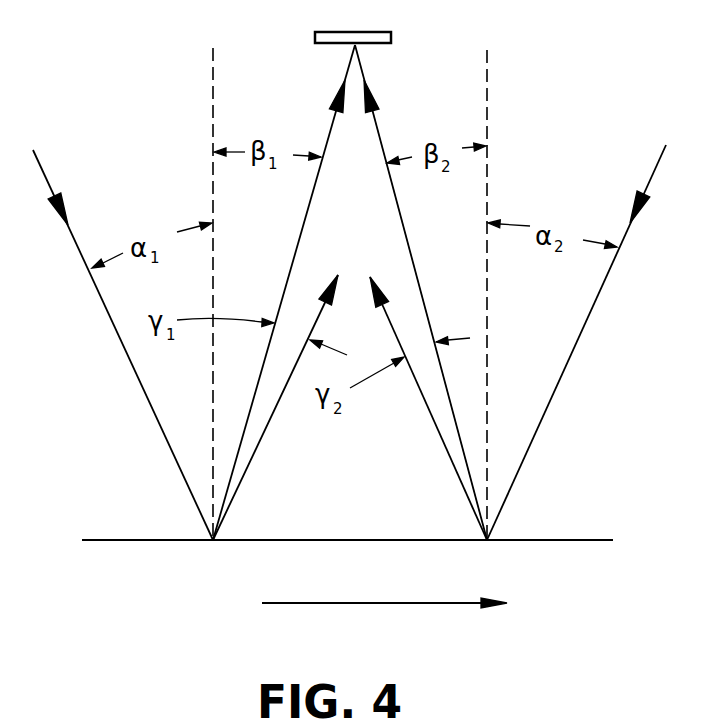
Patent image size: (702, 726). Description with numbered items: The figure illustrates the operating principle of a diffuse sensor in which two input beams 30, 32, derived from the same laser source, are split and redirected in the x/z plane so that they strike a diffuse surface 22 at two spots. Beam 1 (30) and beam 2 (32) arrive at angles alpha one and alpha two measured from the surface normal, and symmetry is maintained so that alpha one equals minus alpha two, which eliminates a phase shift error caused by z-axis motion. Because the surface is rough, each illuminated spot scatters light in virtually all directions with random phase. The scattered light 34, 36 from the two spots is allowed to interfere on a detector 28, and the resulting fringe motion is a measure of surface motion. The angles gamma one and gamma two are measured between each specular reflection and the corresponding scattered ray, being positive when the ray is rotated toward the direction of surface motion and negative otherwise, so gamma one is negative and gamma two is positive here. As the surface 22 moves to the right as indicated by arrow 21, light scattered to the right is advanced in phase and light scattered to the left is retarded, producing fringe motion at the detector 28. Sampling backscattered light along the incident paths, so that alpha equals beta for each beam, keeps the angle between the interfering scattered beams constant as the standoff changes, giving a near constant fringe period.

The beam 1 is at (120, 331).
The beam 2 is at (581, 330).
The arrow 21 is at (355, 603).
The surface 22 is at (568, 540).
The detector 28 is at (378, 43).
The input beam 30 is at (138, 375).
The input beam 32 is at (570, 358).
The scattered light 34 is at (250, 463).
The scattered light 36 is at (458, 475).